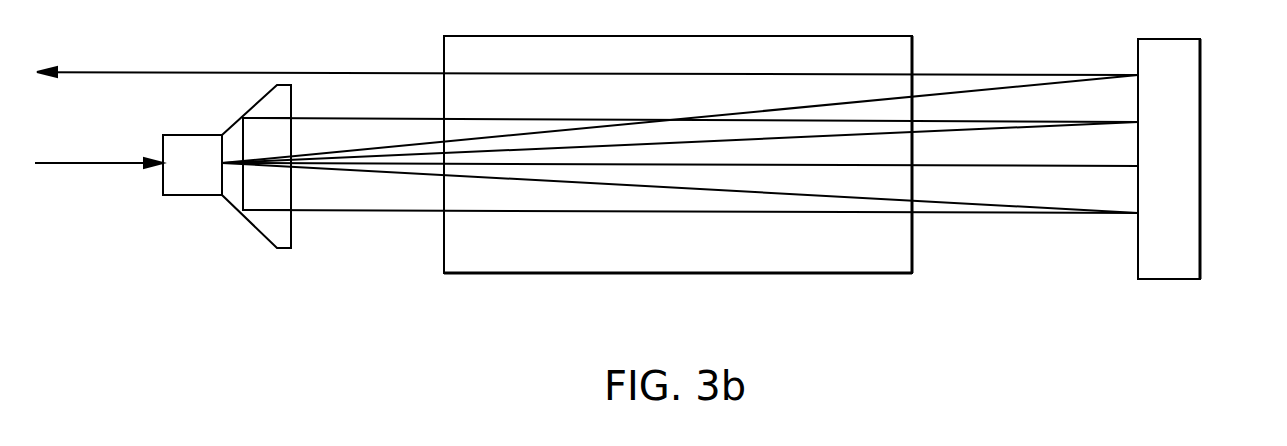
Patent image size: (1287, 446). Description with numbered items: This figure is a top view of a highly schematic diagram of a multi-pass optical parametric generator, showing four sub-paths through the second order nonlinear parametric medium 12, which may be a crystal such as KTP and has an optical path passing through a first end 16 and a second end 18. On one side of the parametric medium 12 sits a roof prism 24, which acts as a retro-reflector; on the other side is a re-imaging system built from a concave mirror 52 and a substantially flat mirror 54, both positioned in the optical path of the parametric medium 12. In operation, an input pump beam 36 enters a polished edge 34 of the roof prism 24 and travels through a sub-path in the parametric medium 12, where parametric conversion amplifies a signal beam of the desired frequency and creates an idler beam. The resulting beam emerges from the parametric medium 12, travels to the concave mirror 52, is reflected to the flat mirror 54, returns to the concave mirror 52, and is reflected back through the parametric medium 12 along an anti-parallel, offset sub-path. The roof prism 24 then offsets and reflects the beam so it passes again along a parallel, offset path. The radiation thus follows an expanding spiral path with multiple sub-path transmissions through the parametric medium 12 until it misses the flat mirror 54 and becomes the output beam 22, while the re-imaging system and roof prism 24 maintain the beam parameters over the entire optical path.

The second order nonlinear parametric medium 12 is at (655, 275).
The first end 16 is at (444, 257).
The second end 18 is at (915, 255).
The output beam 22 is at (271, 72).
The roof prism 24 is at (263, 240).
The polished edge 34 is at (207, 133).
The input pump beam 36 is at (80, 168).
The concave mirror 52 is at (1203, 82).
The substantially flat mirror 54 is at (185, 198).